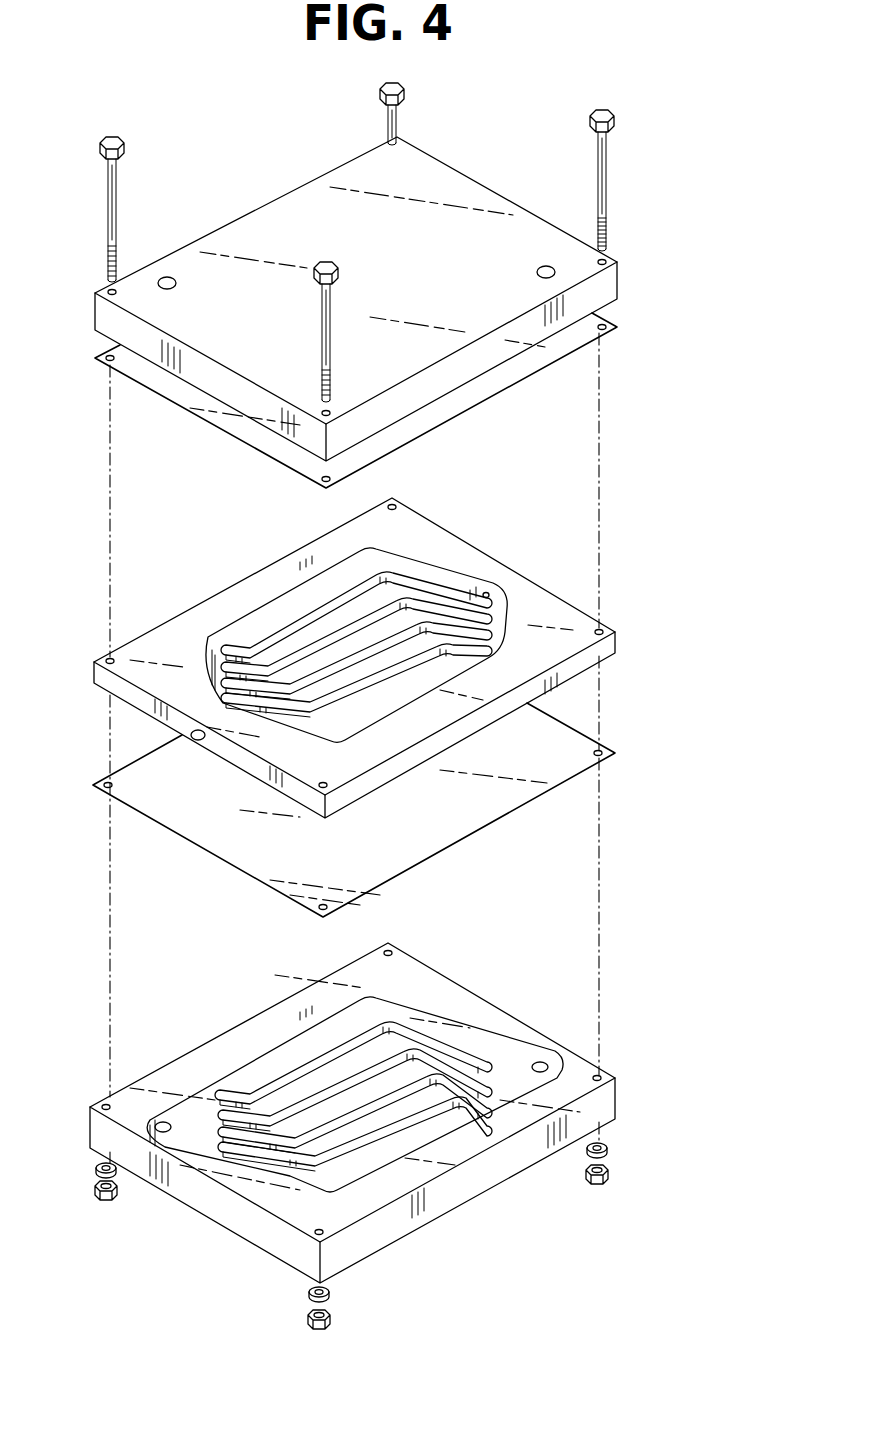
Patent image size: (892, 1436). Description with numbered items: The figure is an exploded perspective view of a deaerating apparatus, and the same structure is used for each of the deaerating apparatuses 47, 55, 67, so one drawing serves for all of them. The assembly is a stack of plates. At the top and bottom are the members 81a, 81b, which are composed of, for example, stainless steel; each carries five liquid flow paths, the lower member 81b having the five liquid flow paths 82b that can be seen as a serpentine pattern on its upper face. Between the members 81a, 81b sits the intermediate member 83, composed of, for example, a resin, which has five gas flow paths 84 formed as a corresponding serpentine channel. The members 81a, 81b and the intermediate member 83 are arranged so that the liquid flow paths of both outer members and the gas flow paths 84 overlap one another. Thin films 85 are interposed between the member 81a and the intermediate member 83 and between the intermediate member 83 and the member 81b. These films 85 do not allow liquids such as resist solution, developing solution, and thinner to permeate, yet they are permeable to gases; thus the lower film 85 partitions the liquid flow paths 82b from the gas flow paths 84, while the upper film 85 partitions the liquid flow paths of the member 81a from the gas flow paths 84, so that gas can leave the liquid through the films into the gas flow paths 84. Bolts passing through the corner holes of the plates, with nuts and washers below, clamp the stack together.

The deaerating apparatus 47 is at (423, 682).
The deaerating apparatus 55 is at (354, 706).
The deaerating apparatus 67 is at (354, 706).
The member 81a is at (612, 283).
The member 81b is at (387, 1113).
The liquid flow paths 82b is at (280, 1058).
The intermediate member 83 is at (389, 658).
The gas flow paths 84 is at (295, 600).
The films 85 is at (620, 330).